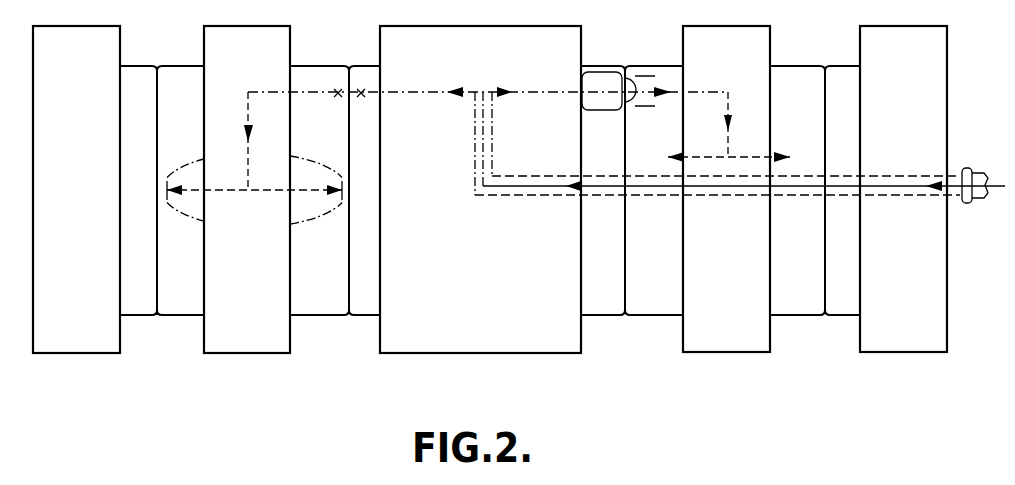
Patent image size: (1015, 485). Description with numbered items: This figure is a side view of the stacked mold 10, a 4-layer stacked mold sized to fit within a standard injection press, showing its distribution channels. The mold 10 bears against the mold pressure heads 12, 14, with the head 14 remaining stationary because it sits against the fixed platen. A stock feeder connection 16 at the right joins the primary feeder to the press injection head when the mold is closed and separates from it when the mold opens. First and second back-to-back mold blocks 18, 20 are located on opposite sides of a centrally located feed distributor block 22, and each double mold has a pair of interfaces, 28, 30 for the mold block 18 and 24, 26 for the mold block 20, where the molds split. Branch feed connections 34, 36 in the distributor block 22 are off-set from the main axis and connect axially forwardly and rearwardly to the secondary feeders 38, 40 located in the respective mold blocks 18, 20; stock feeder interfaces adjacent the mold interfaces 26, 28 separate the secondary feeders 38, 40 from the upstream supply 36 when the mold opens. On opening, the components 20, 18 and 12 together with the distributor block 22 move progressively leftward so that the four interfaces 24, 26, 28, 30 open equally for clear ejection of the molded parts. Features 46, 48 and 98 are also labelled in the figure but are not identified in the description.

The mold 10 is at (195, 392).
The mold pressure head 12 is at (65, 354).
The mold pressure head 14 is at (908, 352).
The stock feeder connection 16 is at (965, 167).
The first mold block 18 is at (257, 354).
The second mold block 20 is at (713, 352).
The feed distributor block 22 is at (525, 354).
The mold interface 24 is at (838, 298).
The mold interface 26 is at (652, 302).
The mold interface 28 is at (337, 298).
The mold interface 30 is at (159, 309).
The joint 4 is at (160, 307).
The branch feed connection 34 is at (401, 92).
The branch feed connection 36 is at (562, 92).
The secondary feeder 38 is at (250, 112).
The secondary feeder 40 is at (729, 127).
The first connection point 46 is at (362, 96).
The second connection point 48 is at (337, 98).
The drive shaft path 98 is at (580, 215).